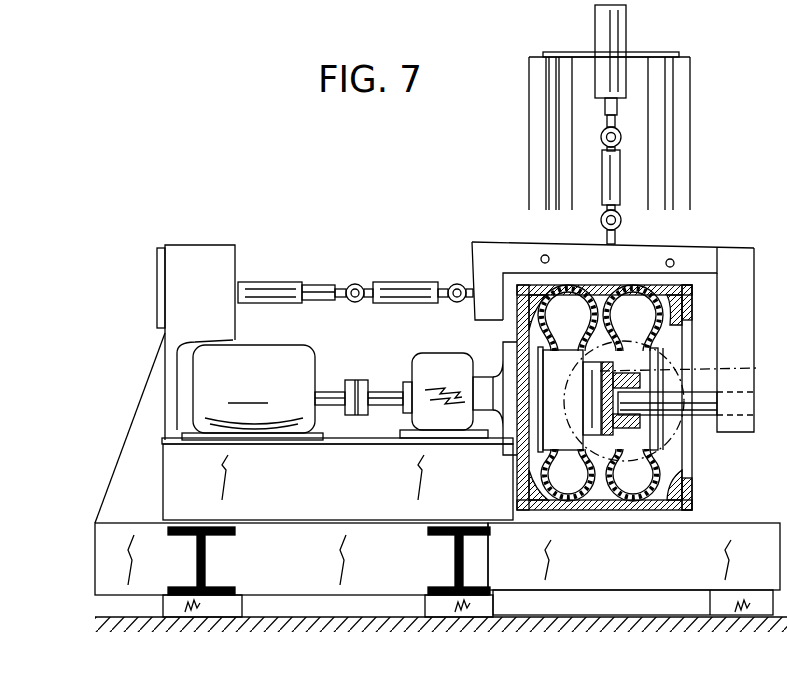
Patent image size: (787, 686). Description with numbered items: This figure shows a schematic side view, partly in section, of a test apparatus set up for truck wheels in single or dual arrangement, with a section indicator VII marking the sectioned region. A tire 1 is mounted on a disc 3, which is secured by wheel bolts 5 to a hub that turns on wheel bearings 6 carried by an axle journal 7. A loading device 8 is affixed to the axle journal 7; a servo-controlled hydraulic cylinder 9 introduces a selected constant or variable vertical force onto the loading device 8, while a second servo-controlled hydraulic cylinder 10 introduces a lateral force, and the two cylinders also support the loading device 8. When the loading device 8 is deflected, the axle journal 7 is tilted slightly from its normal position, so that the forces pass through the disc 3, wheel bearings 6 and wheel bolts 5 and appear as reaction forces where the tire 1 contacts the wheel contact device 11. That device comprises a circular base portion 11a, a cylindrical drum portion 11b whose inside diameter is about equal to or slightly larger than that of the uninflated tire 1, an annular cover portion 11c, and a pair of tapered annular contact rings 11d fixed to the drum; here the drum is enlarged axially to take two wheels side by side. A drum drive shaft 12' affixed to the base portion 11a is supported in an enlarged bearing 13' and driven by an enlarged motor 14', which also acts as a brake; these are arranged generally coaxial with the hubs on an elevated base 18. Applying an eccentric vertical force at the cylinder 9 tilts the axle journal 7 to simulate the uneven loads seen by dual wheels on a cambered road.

The tire 1 is at (643, 285).
The disc 3 is at (547, 430).
The wheel bolts 5 is at (673, 373).
The wheel bearings 6 is at (648, 418).
The axle journal 7 is at (700, 416).
The loading device 8 is at (712, 262).
The servo-controlled hydraulic cylinder 9 is at (618, 30).
The servo-controlled hydraulic cylinder 10 is at (272, 290).
The wheel contact device 11 is at (623, 383).
The circular base portion 11a is at (521, 512).
The cylindrical drum portion 11b is at (603, 512).
The annular cover portion 11c is at (695, 494).
The annular contact rings 11d is at (543, 512).
The drum drive shaft 12' is at (363, 368).
The bearing 13' is at (458, 387).
The motor 14' is at (259, 378).
The elevated base 18 is at (347, 507).
The section indicator VII is at (675, 401).